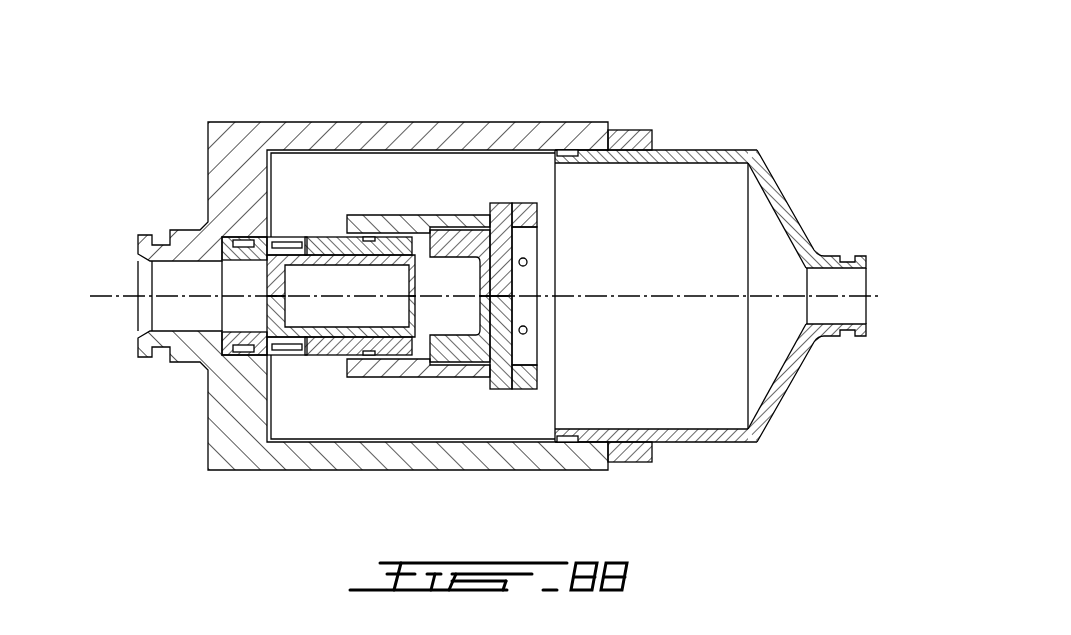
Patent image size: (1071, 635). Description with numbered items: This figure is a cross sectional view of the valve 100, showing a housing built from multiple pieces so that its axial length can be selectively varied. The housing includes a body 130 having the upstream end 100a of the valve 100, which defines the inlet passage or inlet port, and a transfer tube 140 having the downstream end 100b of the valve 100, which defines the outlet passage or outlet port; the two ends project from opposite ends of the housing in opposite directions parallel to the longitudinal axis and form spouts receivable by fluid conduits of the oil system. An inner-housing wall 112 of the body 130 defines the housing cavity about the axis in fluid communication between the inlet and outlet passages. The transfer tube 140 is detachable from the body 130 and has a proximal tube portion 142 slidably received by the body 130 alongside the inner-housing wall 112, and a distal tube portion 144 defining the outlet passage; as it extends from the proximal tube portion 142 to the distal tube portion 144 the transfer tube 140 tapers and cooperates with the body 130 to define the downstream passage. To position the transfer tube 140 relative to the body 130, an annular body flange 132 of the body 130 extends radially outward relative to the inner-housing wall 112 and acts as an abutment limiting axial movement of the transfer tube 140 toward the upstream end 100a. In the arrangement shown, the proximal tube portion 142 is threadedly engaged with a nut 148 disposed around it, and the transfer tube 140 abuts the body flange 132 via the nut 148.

The valve 100 is at (146, 125).
The upstream end 100a is at (138, 263).
The downstream end 100b is at (868, 273).
The inner-housing wall 112 is at (443, 436).
The body 130 is at (396, 122).
The body flange 132 is at (608, 124).
The nut 148 is at (648, 131).
The proximal tube portion 142 is at (755, 151).
The distal tube portion 144 is at (826, 255).
The transfer tube 140 is at (787, 397).